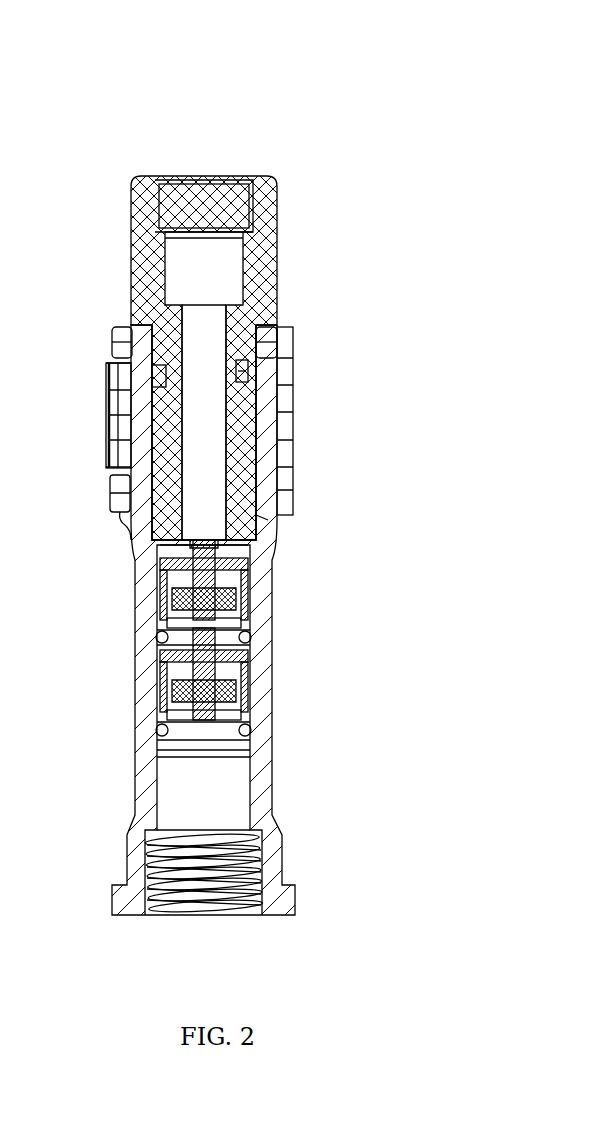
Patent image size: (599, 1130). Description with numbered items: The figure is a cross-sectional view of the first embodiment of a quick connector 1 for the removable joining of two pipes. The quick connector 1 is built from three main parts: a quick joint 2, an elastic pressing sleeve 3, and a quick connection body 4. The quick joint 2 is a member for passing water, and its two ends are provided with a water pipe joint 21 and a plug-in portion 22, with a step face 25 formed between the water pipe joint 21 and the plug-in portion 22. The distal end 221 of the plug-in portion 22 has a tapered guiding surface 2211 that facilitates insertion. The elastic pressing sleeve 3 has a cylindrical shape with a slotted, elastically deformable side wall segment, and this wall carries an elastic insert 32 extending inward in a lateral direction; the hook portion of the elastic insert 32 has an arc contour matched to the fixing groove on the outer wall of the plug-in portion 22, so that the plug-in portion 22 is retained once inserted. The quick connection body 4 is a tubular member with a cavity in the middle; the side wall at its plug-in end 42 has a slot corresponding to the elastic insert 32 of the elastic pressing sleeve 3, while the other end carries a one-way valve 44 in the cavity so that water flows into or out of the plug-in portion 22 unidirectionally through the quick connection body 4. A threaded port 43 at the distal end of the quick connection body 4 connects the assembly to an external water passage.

The quick connector 1 is at (418, 90).
The quick joint 2 is at (270, 271).
The water pipe joint 21 is at (240, 207).
The plug-in portion 22 is at (256, 456).
The distal end 221 is at (262, 506).
The tapered guiding surface 2211 is at (245, 541).
The step face 25 is at (277, 327).
The elastic pressing sleeve 3 is at (287, 376).
The elastic insert 32 is at (250, 371).
The quick connection body 4 is at (148, 601).
The plug-in end 42 is at (125, 327).
The threaded port 43 is at (255, 858).
The one-way valve 44 is at (250, 570).